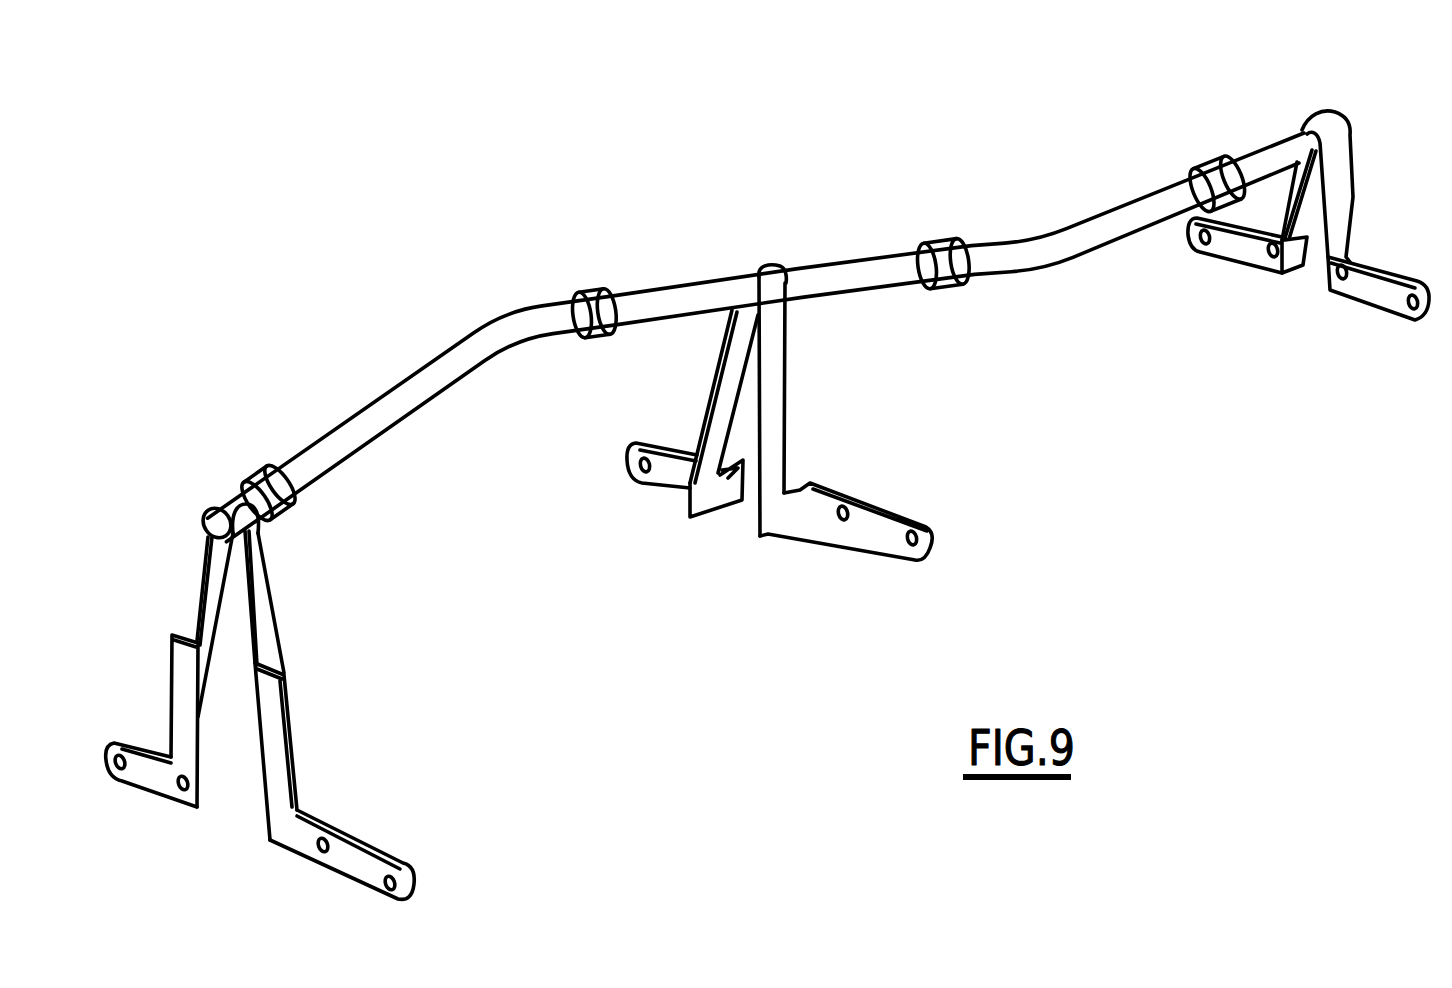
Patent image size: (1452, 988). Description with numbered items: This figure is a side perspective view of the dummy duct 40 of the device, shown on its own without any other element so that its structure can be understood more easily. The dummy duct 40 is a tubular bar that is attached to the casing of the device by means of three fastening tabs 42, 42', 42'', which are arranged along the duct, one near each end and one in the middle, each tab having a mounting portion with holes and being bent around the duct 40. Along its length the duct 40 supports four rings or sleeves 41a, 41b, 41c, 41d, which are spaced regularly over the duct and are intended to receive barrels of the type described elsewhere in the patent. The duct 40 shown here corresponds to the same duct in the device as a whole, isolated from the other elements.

The dummy duct 40 is at (405, 392).
The ring or sleeve 41a is at (262, 470).
The ring or sleeve 41b is at (592, 291).
The ring or sleeve 41c is at (945, 243).
The ring or sleeve 41d is at (1213, 167).
The fastening tab 42 is at (260, 701).
The fastening tab 42' is at (823, 412).
The fastening tab 42'' is at (1308, 235).